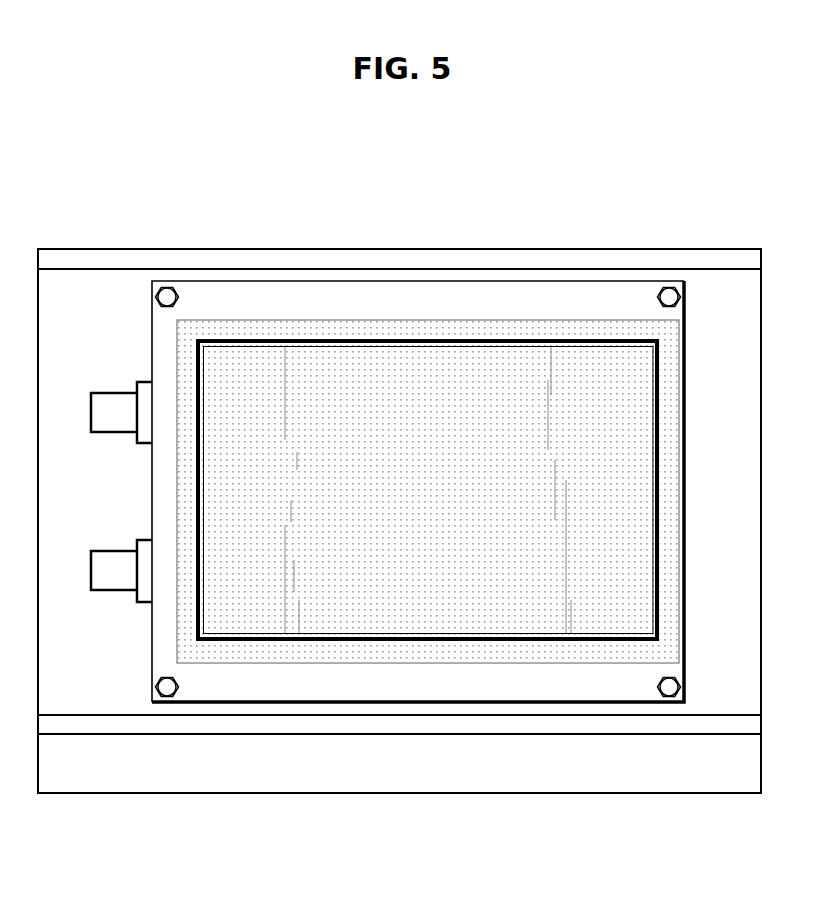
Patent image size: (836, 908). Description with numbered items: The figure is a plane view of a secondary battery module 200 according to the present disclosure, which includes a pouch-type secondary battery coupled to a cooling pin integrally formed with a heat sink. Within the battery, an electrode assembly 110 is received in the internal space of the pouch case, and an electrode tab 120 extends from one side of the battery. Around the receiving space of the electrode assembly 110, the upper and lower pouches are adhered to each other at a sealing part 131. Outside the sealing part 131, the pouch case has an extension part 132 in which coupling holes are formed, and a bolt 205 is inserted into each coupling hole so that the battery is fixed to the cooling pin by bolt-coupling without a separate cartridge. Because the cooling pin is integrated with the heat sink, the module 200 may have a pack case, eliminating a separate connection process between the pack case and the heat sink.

The secondary battery module 200 is at (143, 190).
The sealing part 131 is at (385, 293).
The bolt 205 is at (672, 290).
The extension part 132 is at (284, 328).
The electrode assembly 110 is at (503, 355).
The electrode tab 120 is at (107, 430).